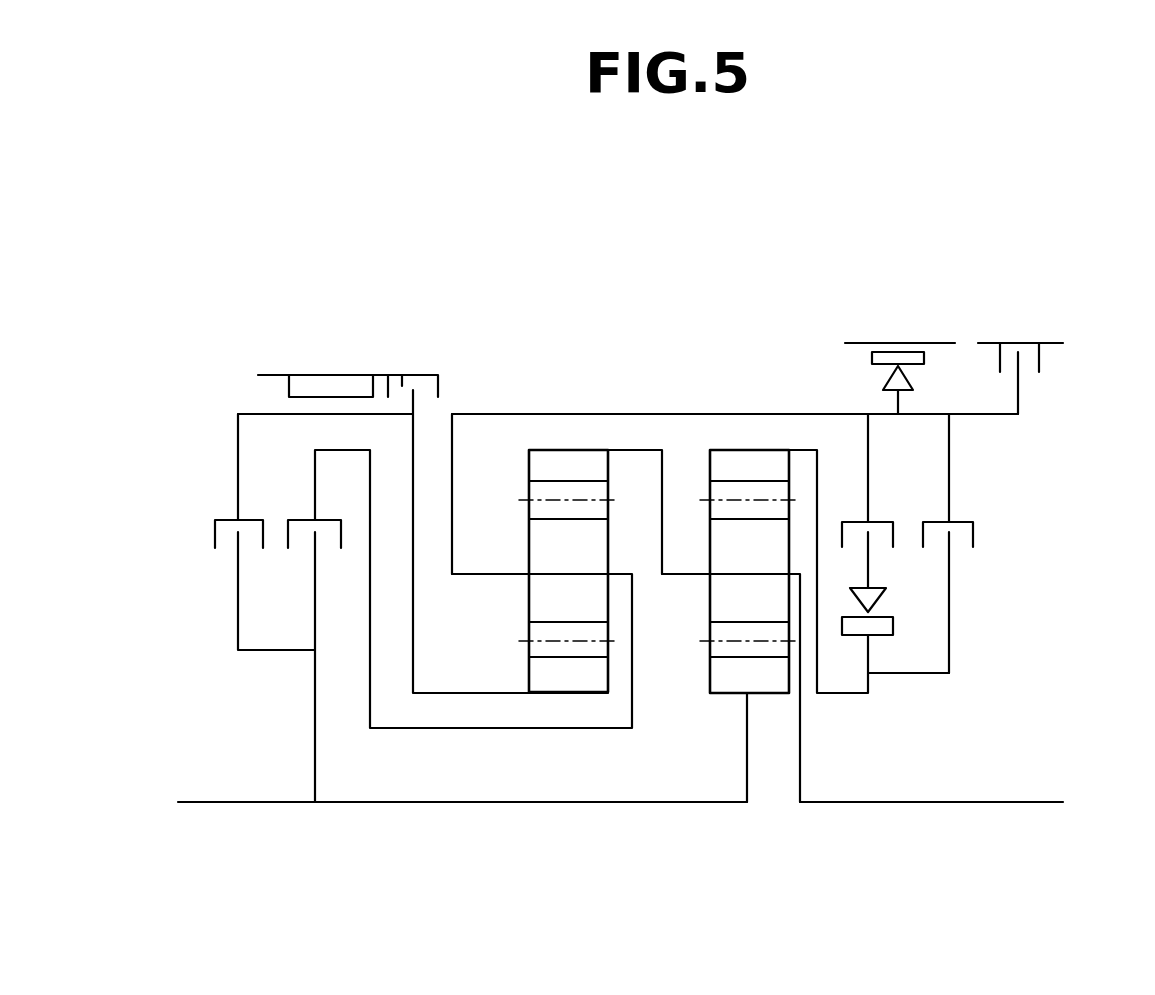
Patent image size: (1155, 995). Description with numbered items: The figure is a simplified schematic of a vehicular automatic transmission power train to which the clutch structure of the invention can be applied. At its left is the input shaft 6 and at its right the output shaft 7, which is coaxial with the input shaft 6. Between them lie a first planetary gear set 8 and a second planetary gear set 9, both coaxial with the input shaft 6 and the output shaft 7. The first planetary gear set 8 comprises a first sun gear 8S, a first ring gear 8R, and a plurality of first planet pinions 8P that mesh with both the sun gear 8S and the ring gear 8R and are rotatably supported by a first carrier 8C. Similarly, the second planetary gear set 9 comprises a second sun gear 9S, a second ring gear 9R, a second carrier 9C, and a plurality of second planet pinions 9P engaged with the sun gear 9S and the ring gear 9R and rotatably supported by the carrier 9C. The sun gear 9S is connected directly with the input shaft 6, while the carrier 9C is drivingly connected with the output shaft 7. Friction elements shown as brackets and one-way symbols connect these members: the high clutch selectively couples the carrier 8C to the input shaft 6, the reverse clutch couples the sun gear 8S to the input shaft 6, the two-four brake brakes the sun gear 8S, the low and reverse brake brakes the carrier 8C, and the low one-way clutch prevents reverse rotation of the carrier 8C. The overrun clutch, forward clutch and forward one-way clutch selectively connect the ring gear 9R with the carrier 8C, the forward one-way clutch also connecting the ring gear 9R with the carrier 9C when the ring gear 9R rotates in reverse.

The input shaft 6 is at (218, 805).
The output shaft 7 is at (960, 800).
The first planetary gear set 8 is at (574, 693).
The first ring gear 8R is at (531, 462).
The first carrier 8C is at (490, 572).
The first planet pinions 8P is at (535, 601).
The first sun gear 8S is at (535, 671).
The second planetary gear set 9 is at (765, 695).
The second ring gear 9R is at (712, 462).
The second carrier 9C is at (673, 576).
The second planet pinions 9P is at (723, 607).
The second sun gear 9S is at (730, 690).